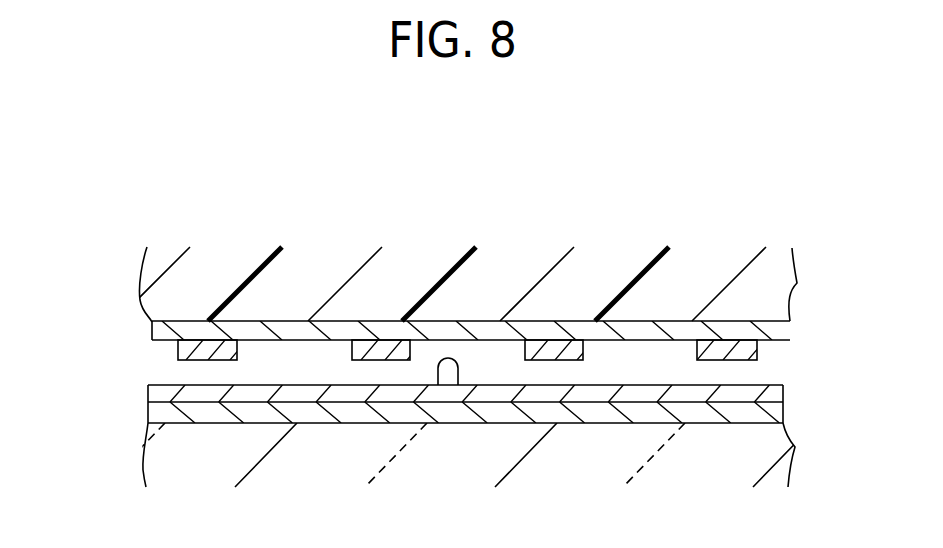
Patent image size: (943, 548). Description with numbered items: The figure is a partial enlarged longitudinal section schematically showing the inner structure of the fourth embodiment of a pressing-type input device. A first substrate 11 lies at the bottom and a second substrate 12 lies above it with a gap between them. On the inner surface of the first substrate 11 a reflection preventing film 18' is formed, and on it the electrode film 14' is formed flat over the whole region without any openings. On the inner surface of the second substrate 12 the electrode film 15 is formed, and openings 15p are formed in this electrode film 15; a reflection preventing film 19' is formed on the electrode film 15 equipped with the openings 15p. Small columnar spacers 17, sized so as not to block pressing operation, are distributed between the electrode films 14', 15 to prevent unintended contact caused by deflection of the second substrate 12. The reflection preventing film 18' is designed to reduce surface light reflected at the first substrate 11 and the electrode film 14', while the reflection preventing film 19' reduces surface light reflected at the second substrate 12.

The first substrate 11 is at (777, 452).
The second substrate 12 is at (777, 285).
The electrode film 14' is at (516, 415).
The electrode film 15 is at (521, 260).
The openings 15p is at (697, 352).
The spacers 17 is at (452, 372).
The reflection preventing film 18' is at (414, 408).
The reflection preventing film 19' is at (408, 311).